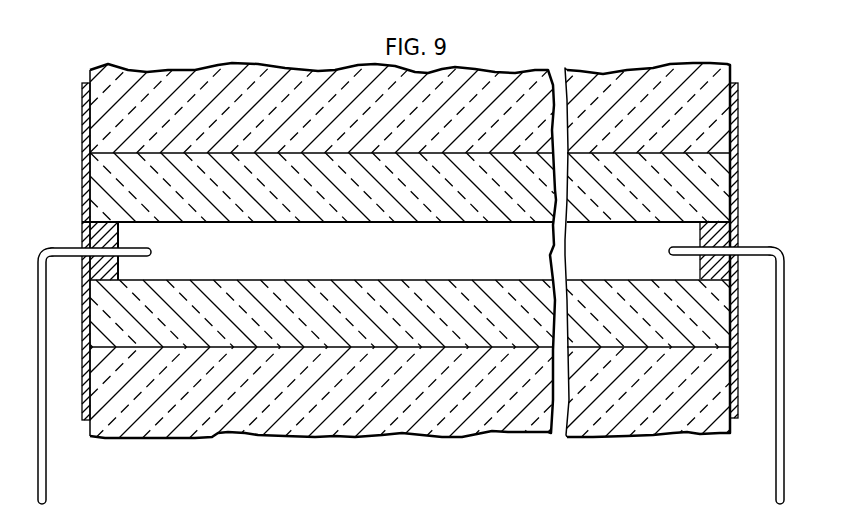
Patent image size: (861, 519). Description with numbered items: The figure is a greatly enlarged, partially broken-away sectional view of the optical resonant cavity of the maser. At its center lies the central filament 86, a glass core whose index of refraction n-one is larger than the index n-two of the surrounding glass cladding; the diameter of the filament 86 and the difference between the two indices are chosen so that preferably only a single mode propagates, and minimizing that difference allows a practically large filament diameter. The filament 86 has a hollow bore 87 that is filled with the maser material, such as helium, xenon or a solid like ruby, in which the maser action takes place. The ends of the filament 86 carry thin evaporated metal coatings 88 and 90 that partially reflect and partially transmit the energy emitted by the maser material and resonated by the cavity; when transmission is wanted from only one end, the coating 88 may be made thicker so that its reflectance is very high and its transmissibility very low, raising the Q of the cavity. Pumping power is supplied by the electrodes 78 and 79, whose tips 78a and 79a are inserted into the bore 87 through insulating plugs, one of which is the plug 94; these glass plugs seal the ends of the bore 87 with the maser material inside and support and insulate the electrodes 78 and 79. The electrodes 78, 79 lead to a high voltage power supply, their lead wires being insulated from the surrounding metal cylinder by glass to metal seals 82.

The glass to metal seals 82 is at (100, 111).
The central filament 86 is at (105, 178).
The evaporated metal coating 88 is at (82, 202).
The evaporated metal coating 90 is at (738, 195).
The insulating plug 94 is at (86, 234).
The hollow bore 87 is at (283, 261).
The electrode tip 78a is at (148, 252).
The electrode 78 is at (48, 479).
The electrode tip 79a is at (672, 250).
The electrode 79 is at (776, 470).